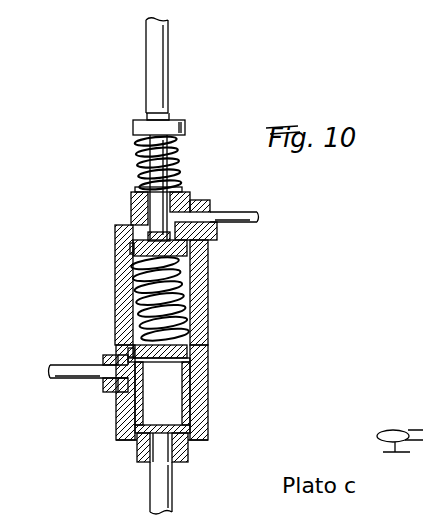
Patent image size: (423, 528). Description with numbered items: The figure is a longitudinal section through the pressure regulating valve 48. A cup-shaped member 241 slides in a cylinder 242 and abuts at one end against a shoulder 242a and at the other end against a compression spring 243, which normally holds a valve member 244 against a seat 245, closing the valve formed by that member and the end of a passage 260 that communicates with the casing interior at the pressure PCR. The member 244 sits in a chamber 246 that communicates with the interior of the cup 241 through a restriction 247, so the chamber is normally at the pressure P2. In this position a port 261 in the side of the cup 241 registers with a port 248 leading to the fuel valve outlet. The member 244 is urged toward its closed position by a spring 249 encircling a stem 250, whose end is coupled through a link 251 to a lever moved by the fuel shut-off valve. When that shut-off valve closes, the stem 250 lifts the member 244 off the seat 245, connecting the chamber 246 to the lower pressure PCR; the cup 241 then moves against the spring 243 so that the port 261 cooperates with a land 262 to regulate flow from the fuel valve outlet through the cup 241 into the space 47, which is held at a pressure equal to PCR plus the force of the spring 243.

The link 251 is at (160, 84).
The spring 249 is at (177, 162).
The stem 250 is at (160, 182).
The passage 260 is at (137, 222).
The casing pressure PCR is at (252, 215).
The chamber 246 is at (128, 265).
The seat 245 is at (133, 248).
The valve member 244 is at (192, 250).
The compression spring 243 is at (175, 300).
The pressure regulating valve 48 is at (250, 336).
The land 262 is at (130, 350).
The restriction 247 is at (205, 352).
The port 248 is at (133, 356).
The cylinder 242 is at (205, 375).
The shoulder 242a is at (136, 412).
The cup-shaped member 241 is at (205, 390).
The port 261 is at (118, 387).
The pressure P2 is at (69, 370).
The space 47 is at (163, 495).